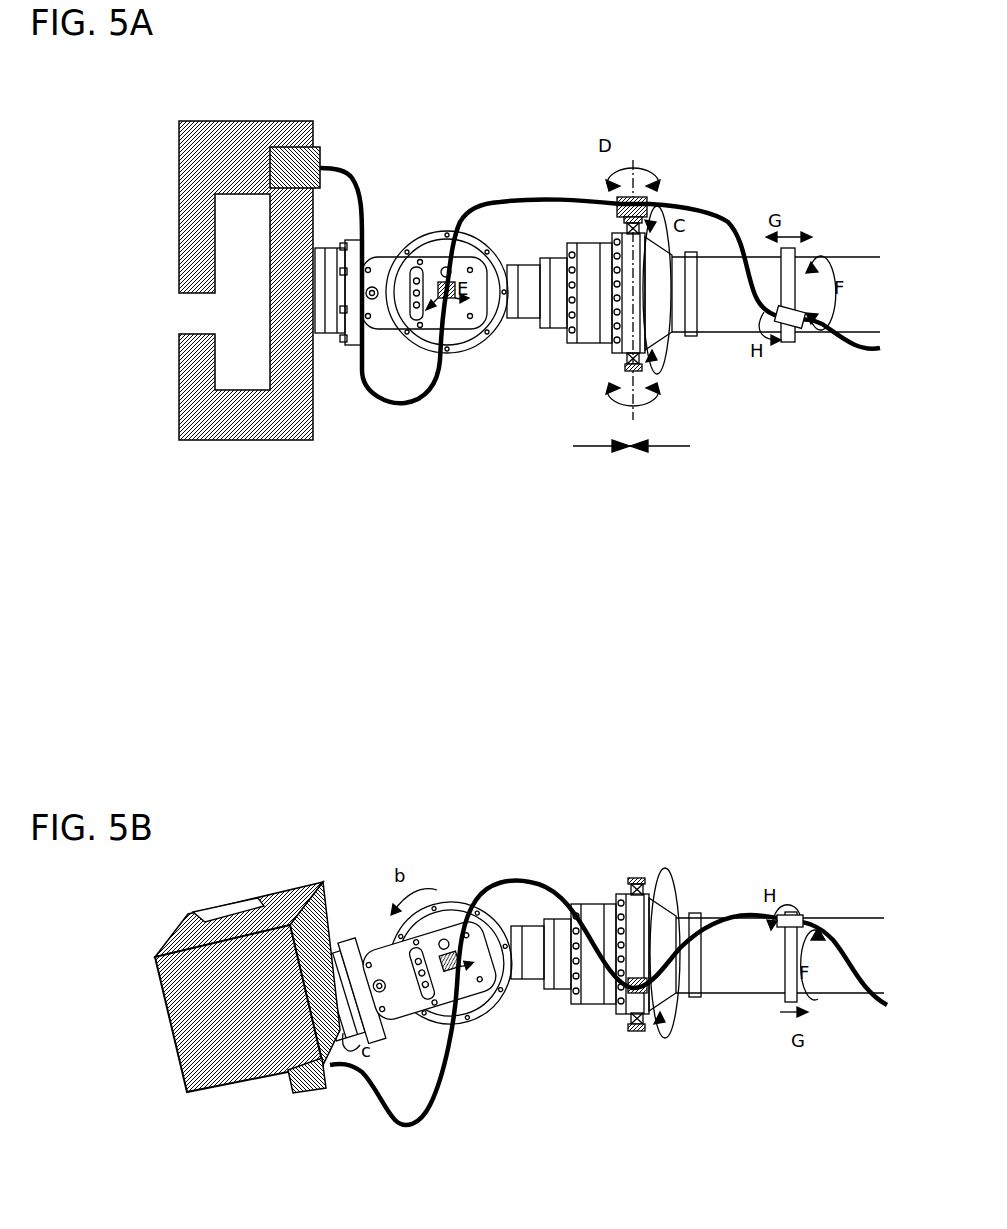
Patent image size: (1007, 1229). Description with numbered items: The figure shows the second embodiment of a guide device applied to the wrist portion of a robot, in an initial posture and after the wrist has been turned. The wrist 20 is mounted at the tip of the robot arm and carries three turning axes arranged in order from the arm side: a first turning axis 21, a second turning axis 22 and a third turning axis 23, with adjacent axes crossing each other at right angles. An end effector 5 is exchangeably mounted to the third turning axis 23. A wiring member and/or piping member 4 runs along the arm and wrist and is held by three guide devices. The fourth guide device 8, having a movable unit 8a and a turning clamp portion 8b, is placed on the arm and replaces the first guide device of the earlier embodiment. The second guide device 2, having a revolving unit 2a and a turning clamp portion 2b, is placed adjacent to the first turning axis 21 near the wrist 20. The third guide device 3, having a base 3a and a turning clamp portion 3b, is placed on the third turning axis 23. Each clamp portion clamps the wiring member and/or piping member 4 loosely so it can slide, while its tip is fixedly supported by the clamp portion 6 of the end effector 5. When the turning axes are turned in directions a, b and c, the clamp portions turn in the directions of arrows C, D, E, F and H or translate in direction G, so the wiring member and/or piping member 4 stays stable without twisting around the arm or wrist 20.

In FIG. 5A, the second guide device 2 is at (638, 152).
In FIG. 5B, the second guide device 2 is at (660, 868).
In FIG. 5A, the revolving unit 2a is at (652, 381).
In FIG. 5B, the revolving unit 2a is at (646, 1038).
In FIG. 5A, the turning clamp portion 2b is at (650, 203).
In FIG. 5B, the turning clamp portion 2b is at (656, 870).
In FIG. 5A, the third guide device 3 is at (452, 195).
In FIG. 5B, the third guide device 3 is at (429, 970).
In FIG. 5A, the base 3a is at (433, 312).
In FIG. 5A, the turning clamp portion 3b is at (465, 306).
In FIG. 5B, the turning clamp portion 3b is at (468, 983).
In FIG. 5A, the wiring member and/or piping member 4 is at (536, 196).
In FIG. 5B, the wiring member and/or piping member 4 is at (389, 1130).
In FIG. 5A, the end effector 5 is at (256, 125).
In FIG. 5B, the end effector 5 is at (282, 900).
In FIG. 5A, the clamp portion 6 is at (322, 150).
In FIG. 5B, the clamp portion 6 is at (300, 1093).
In FIG. 5A, the fourth guide device 8 is at (830, 165).
In FIG. 5B, the fourth guide device 8 is at (840, 833).
In FIG. 5A, the movable unit 8a is at (790, 246).
In FIG. 5B, the movable unit 8a is at (796, 912).
In FIG. 5A, the turning clamp portion 8b is at (798, 330).
In FIG. 5B, the turning clamp portion 8b is at (803, 920).
In FIG. 5A, the wrist 20 is at (449, 408).
In FIG. 5B, the wrist 20 is at (469, 1110).
In FIG. 5A, the first turning axis 21 is at (590, 330).
In FIG. 5B, the first turning axis 21 is at (592, 990).
In FIG. 5A, the second turning axis 22 is at (445, 240).
In FIG. 5B, the second turning axis 22 is at (455, 910).
In FIG. 5A, the third turning axis 23 is at (330, 272).
In FIG. 5B, the third turning axis 23 is at (340, 937).